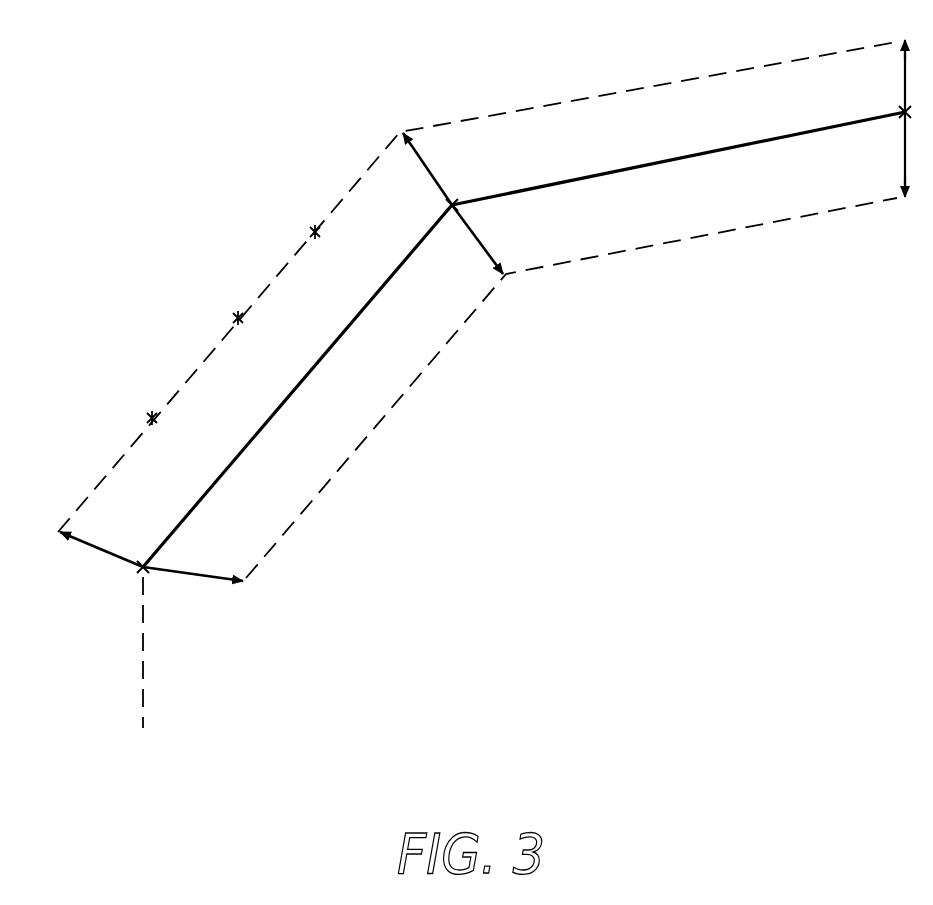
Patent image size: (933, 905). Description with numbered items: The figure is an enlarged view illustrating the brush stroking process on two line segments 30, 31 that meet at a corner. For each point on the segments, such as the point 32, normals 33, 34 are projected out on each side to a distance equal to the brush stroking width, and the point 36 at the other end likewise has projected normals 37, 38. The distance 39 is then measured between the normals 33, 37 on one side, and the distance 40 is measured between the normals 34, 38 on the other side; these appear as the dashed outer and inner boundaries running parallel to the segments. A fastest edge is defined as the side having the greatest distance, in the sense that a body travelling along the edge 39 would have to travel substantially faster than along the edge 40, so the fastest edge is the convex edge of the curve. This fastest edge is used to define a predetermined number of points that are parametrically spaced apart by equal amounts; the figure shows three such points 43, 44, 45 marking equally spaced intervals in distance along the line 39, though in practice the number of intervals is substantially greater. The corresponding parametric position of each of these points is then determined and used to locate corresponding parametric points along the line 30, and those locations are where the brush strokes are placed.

The line segment 30 is at (263, 423).
The line segment 31 is at (685, 160).
The point 32 is at (452, 212).
The normal 33 is at (430, 168).
The normal 34 is at (480, 243).
The point 36 is at (147, 590).
The projected normal 37 is at (102, 545).
The projected normal 38 is at (183, 572).
The distance 39 is at (280, 273).
The distance 40 is at (392, 402).
The point 43 is at (152, 407).
The point 44 is at (237, 307).
The point 45 is at (315, 215).